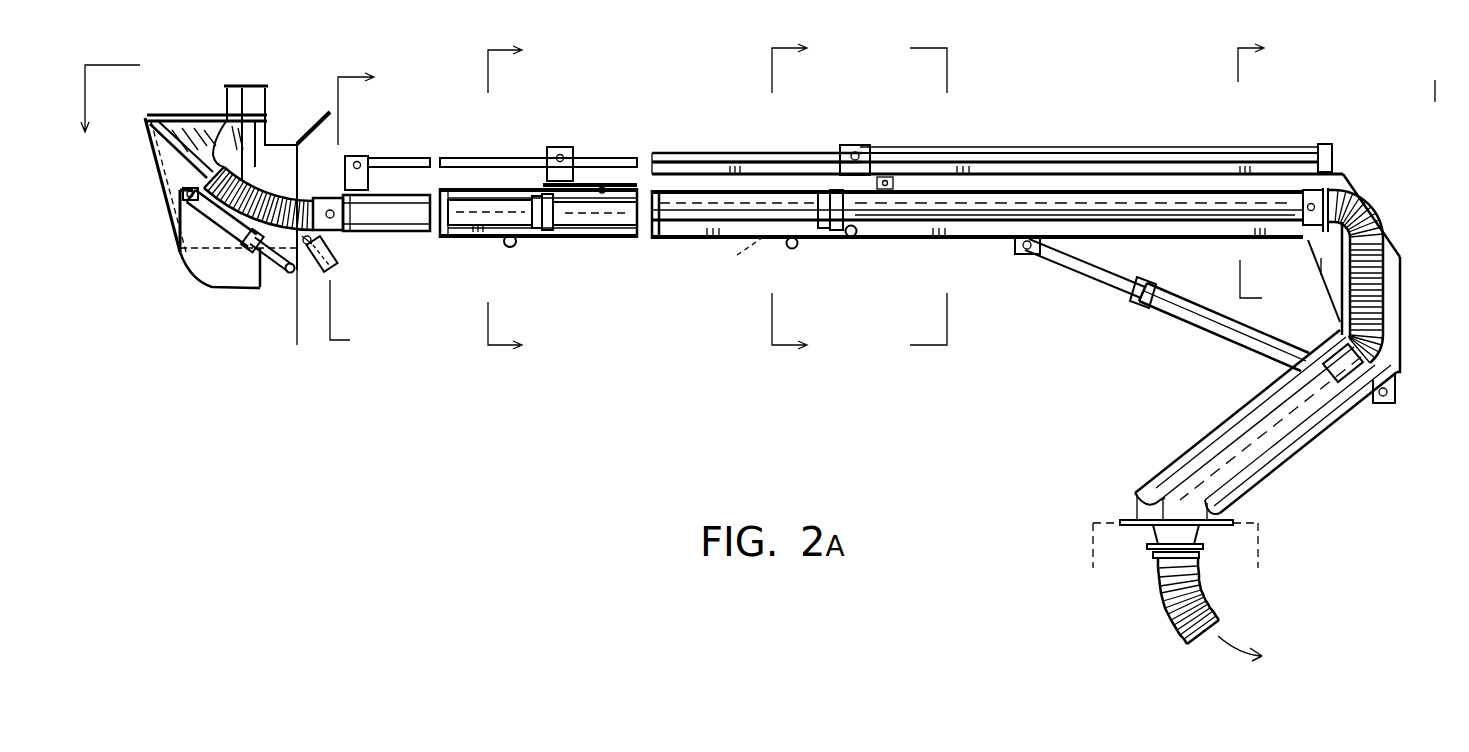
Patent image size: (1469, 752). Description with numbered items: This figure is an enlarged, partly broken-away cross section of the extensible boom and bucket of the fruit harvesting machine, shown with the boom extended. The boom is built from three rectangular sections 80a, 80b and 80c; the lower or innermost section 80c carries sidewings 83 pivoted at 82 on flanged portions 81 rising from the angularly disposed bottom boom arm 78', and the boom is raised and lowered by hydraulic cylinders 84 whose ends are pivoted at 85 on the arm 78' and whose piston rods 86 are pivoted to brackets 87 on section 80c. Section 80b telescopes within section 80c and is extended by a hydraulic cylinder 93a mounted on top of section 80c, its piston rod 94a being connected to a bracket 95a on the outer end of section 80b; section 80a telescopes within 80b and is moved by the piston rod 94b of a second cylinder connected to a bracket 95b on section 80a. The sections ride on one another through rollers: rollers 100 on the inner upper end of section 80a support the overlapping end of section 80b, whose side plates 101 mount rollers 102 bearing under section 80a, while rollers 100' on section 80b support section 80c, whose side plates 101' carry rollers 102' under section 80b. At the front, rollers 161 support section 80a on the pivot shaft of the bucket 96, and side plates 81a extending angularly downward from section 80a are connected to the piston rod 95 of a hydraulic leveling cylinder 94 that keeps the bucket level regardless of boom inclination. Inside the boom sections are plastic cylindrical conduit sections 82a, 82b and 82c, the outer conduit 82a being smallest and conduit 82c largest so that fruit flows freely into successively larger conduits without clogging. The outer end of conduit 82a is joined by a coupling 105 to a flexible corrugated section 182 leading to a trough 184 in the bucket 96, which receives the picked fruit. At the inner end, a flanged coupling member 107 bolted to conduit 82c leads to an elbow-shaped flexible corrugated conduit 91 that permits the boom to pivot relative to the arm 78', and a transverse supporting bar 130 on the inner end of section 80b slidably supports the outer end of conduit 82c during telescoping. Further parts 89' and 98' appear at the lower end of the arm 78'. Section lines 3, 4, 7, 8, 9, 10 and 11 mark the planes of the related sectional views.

The section line 3- 3 is at (759, 115).
The section line 4- 4 is at (805, 323).
The section line 7- 7 is at (363, 211).
The section line 8- 8 is at (512, 200).
The section line 9- 9 is at (799, 201).
The section line 10- 10 is at (912, 201).
The section line 11- 11 is at (1269, 177).
The trough 184 is at (198, 128).
The flexible tubular corrugated section 182 is at (253, 158).
The coupling 105 is at (368, 233).
The bracket 95b is at (370, 158).
The hydraulic leveling cylinder 94 is at (180, 230).
The bucket 96 is at (226, 292).
The piston rod 95 is at (273, 272).
The rollers 161 is at (338, 262).
The side plates 81a is at (332, 282).
The boom section 80a is at (472, 239).
The piston rod 94b is at (484, 158).
The conduit section 82a is at (505, 203).
The bracket 95a is at (563, 150).
The rollers 100 is at (605, 153).
The side plates 101 is at (595, 252).
The rollers 102 is at (530, 268).
The boom section 80b is at (687, 240).
The boom section 80c is at (983, 241).
The hydraulic cylinder 93a is at (1135, 152).
The piston rod 94a is at (737, 152).
The conduit section 82b is at (805, 197).
The conduit section 82c is at (1020, 200).
The rollers 100' is at (883, 153).
The side plates 101' is at (738, 260).
The rollers 102' is at (816, 263).
The transverse supporting bar 130 is at (868, 230).
The flanged coupling member 107 is at (1328, 180).
The sidewings 83 is at (1358, 195).
The flanged portions 81 is at (1395, 297).
The pivot 82 is at (1390, 265).
The elbow-shaped flexible tubular conduit 91 is at (1388, 322).
The pivot 85 is at (1393, 394).
The brackets 87 is at (1030, 256).
The piston rods 86 is at (1118, 270).
The hydraulic cylinders 84 is at (1197, 330).
The bottom boom arm 78' is at (1245, 449).
The chute 89' is at (1249, 423).
The flexible discharge hose 98' is at (1231, 609).